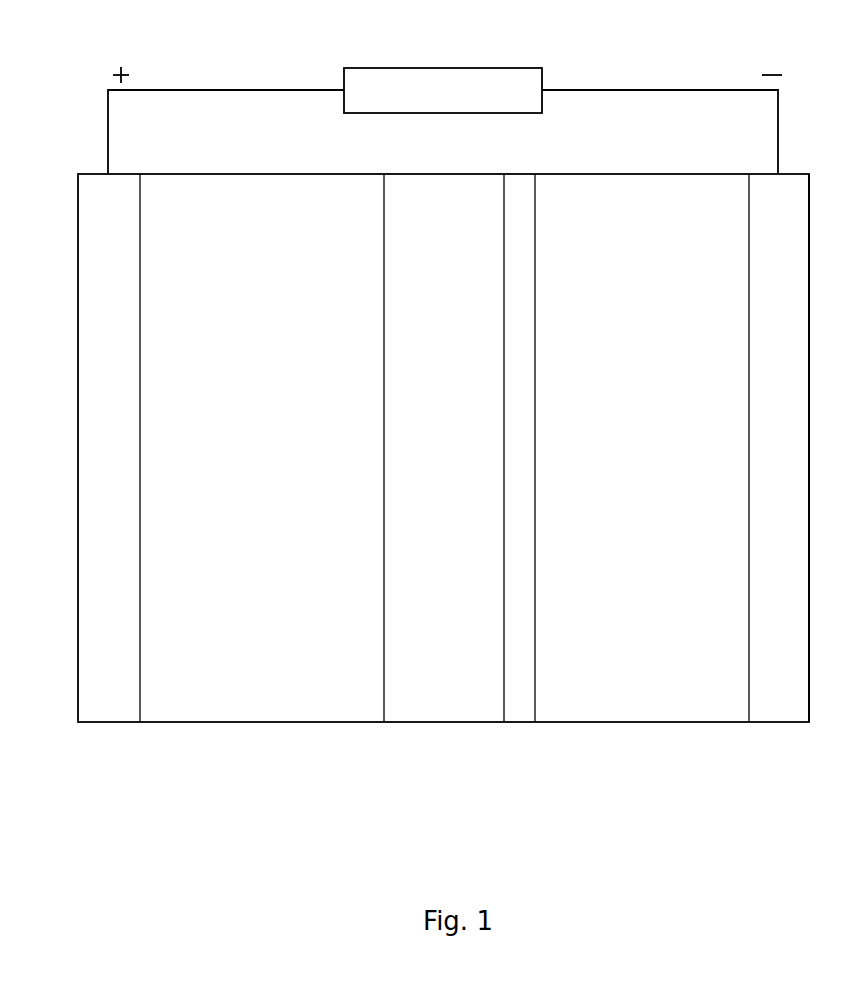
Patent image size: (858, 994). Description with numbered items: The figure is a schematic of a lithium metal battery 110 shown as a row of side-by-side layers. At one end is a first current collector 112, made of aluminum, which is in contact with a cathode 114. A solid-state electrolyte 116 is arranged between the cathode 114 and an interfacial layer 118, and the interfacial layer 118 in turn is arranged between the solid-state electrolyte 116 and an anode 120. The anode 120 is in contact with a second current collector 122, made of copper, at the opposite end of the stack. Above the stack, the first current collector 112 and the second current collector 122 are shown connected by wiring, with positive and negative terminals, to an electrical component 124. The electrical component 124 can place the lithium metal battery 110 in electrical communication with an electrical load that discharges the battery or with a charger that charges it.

The lithium metal battery 110 is at (182, 737).
The first current collector 112 is at (110, 677).
The cathode 114 is at (275, 677).
The solid-state electrolyte 116 is at (459, 685).
The interfacial layer 118 is at (518, 684).
The anode 120 is at (687, 684).
The second current collector 122 is at (785, 684).
The electrical component 124 is at (518, 90).